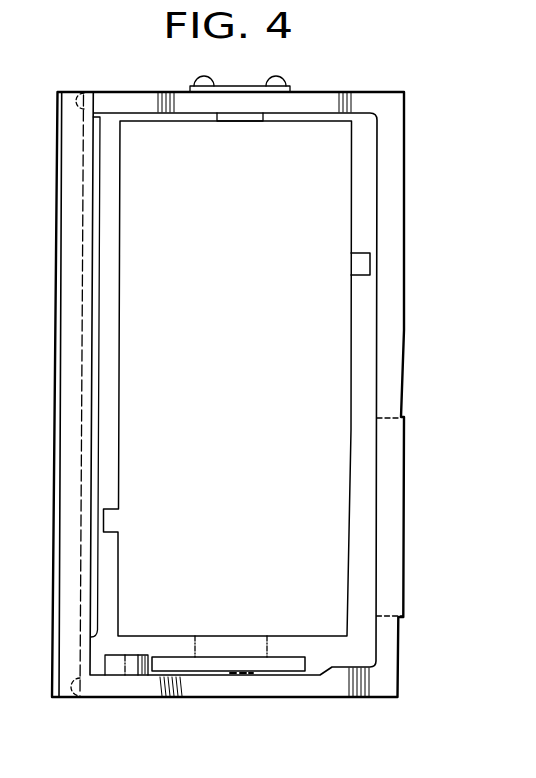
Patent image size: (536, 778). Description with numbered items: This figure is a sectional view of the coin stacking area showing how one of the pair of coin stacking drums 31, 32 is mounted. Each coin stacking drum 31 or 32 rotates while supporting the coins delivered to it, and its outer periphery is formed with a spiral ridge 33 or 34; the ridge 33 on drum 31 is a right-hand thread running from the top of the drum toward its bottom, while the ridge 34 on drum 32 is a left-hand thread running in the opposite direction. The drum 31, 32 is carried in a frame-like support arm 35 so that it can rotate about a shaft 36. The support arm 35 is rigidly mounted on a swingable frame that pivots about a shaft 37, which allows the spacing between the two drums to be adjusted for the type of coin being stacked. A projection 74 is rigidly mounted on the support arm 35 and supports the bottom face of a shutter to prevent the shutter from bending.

The coin stacking drum 31 is at (299, 378).
The coin stacking drum 32 is at (337, 393).
The spiral ridge 33 is at (427, 264).
The spiral ridge 34 is at (371, 265).
The support arm 35 is at (390, 660).
The shaft 36 is at (268, 640).
The shaft 37 is at (190, 669).
The projection 74 is at (132, 676).